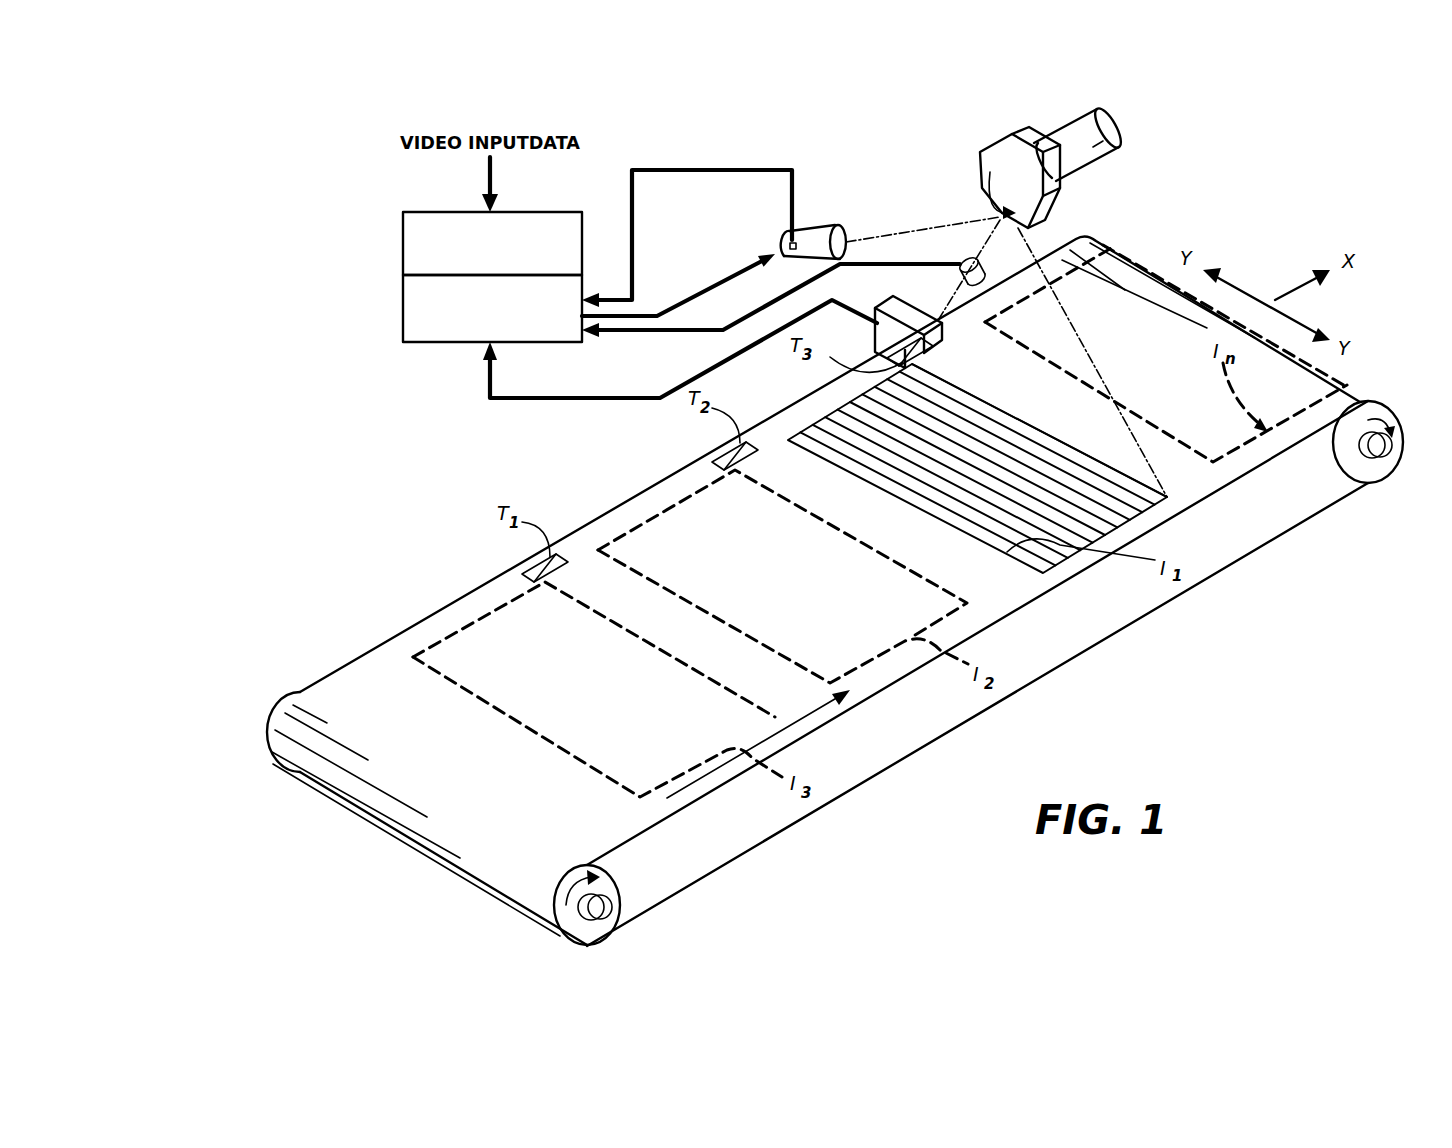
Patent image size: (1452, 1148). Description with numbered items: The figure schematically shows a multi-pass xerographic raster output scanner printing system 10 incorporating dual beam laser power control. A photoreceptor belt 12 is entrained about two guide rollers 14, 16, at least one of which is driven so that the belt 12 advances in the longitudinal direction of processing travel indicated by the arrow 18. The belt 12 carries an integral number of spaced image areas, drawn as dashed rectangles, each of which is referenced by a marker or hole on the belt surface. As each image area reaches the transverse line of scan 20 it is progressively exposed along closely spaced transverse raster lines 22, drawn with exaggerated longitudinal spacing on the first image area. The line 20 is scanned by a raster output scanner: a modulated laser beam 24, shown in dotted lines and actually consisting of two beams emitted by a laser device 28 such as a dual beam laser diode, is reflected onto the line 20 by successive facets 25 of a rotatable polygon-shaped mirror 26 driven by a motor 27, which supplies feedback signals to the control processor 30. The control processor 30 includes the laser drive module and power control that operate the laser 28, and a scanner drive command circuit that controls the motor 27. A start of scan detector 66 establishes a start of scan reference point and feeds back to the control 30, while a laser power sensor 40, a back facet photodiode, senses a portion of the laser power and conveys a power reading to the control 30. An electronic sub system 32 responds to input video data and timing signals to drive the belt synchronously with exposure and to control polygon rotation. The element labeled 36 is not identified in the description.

The printing system 10 is at (397, 511).
The photoreceptor belt 12 is at (743, 848).
The guide roller 14 is at (620, 885).
The guide roller 16 is at (1370, 483).
The arrow 18 is at (803, 718).
The line of scan 20 is at (1140, 478).
The transverse raster lines 22 is at (1078, 537).
The laser beam 24 is at (912, 226).
The facets 25 is at (1015, 142).
The polygon-shaped mirror 26 is at (1072, 198).
The motor 27 is at (1062, 125).
The laser device 28 is at (818, 234).
The control processor 30 is at (438, 343).
The electronic sub system (ESS) 32 is at (430, 212).
The start of scan detector 36 is at (917, 317).
The laser power sensor 40 is at (790, 245).
The start of scan (SOS) detector 66 is at (975, 285).